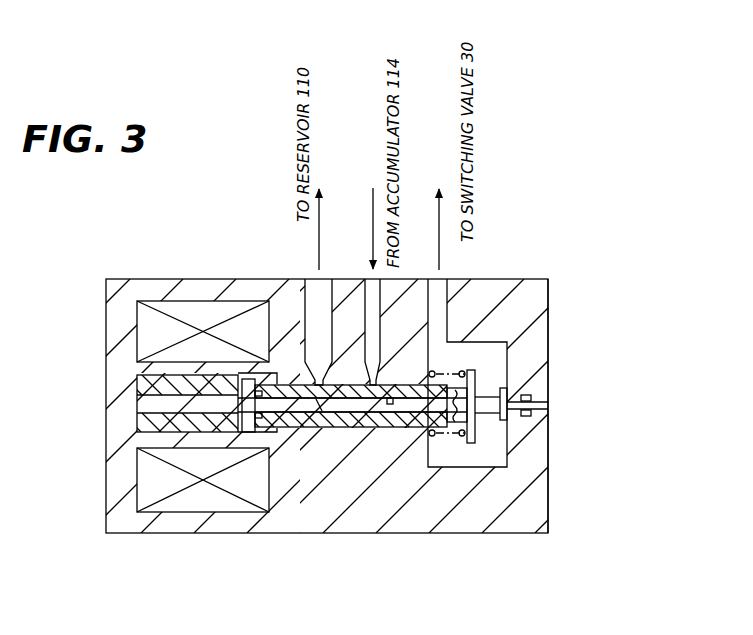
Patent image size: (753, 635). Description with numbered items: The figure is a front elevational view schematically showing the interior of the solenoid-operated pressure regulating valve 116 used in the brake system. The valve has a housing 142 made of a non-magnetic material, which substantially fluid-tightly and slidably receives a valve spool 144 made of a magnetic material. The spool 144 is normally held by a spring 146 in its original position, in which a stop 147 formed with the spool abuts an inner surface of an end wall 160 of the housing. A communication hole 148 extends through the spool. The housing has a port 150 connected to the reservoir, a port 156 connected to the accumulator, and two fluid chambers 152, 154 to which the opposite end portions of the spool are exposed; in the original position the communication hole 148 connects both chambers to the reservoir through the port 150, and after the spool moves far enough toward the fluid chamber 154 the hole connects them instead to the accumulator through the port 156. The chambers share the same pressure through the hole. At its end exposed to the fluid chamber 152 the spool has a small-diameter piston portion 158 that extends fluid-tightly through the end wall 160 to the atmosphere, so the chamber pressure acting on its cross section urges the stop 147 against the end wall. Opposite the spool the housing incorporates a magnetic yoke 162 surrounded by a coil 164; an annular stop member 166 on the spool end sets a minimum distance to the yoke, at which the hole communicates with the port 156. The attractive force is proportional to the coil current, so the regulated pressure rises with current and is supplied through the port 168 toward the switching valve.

The solenoid-operated pressure regulating valve 116 is at (563, 251).
The housing 142 is at (364, 523).
The valve spool 144 is at (378, 422).
The spring 146 is at (433, 437).
The stop 147 is at (505, 384).
The communication hole 148 is at (317, 404).
The port 150 is at (312, 279).
The fluid chamber 152 is at (487, 458).
The fluid chamber 154 is at (273, 436).
The port 156 is at (370, 279).
The piston portion 158 is at (534, 410).
The end wall 160 is at (540, 482).
The yoke 162 is at (144, 388).
The coil 164 is at (183, 502).
The annular stop member 166 is at (248, 434).
The port 168 is at (443, 279).